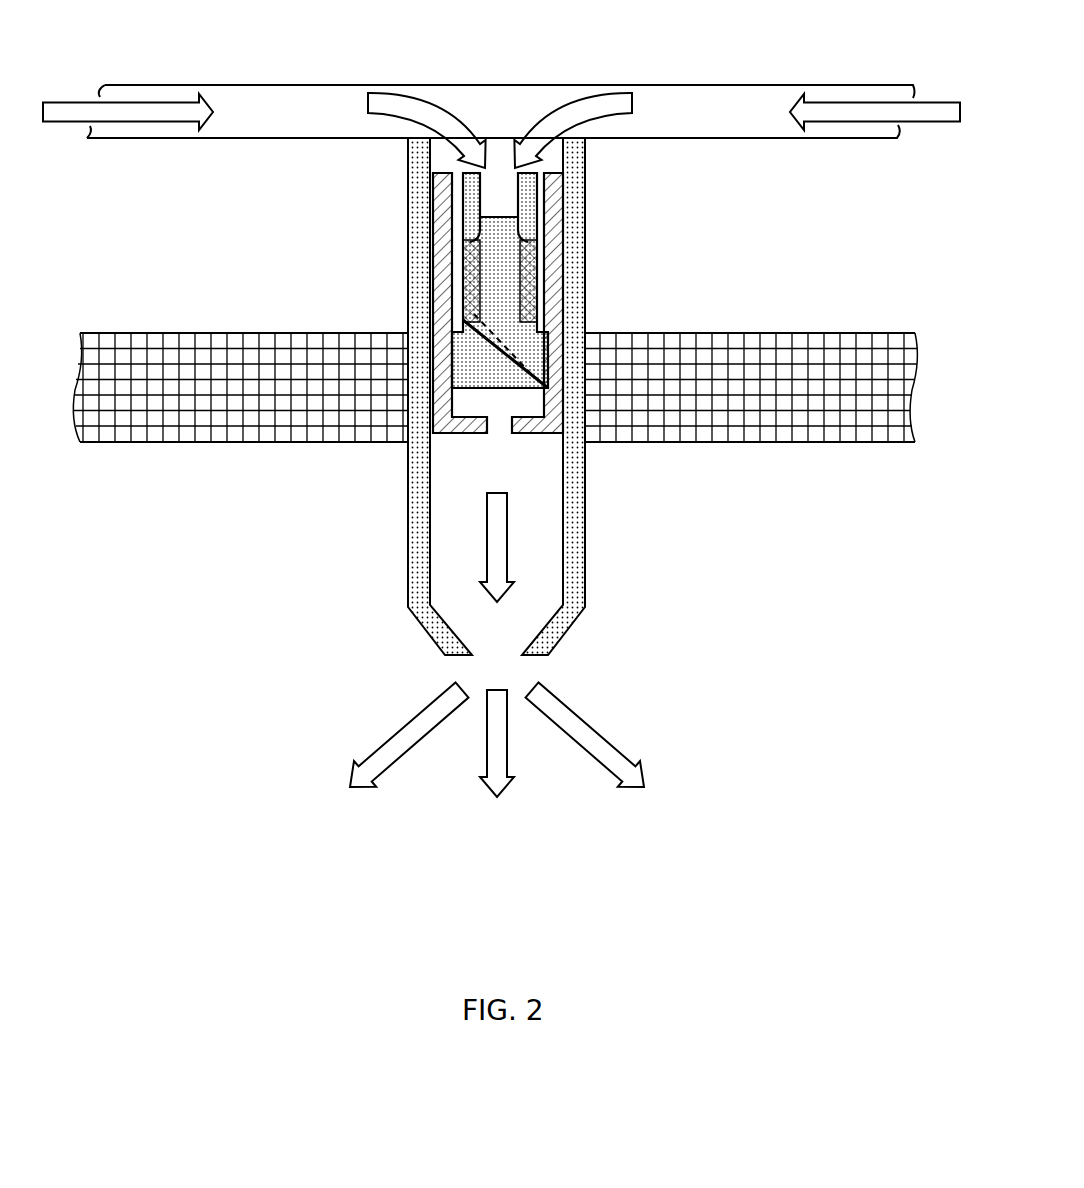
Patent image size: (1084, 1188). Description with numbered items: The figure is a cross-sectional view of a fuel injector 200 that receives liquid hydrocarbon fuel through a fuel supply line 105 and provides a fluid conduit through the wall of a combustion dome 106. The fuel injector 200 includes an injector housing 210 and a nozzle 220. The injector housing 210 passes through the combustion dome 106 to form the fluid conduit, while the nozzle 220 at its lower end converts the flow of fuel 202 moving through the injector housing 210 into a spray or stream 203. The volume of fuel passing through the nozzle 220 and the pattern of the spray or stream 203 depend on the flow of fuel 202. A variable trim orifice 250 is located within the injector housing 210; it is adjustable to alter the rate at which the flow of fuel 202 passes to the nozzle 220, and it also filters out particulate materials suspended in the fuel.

The fuel supply line 105 is at (283, 85).
The combustion dome 106 is at (100, 442).
The fuel injector 200 is at (467, 409).
The flow of fuel 202 is at (573, 112).
The spray or stream 203 is at (386, 720).
The injector housing 210 is at (408, 298).
The nozzle 220 is at (572, 630).
The variable trim orifice 250 is at (536, 446).